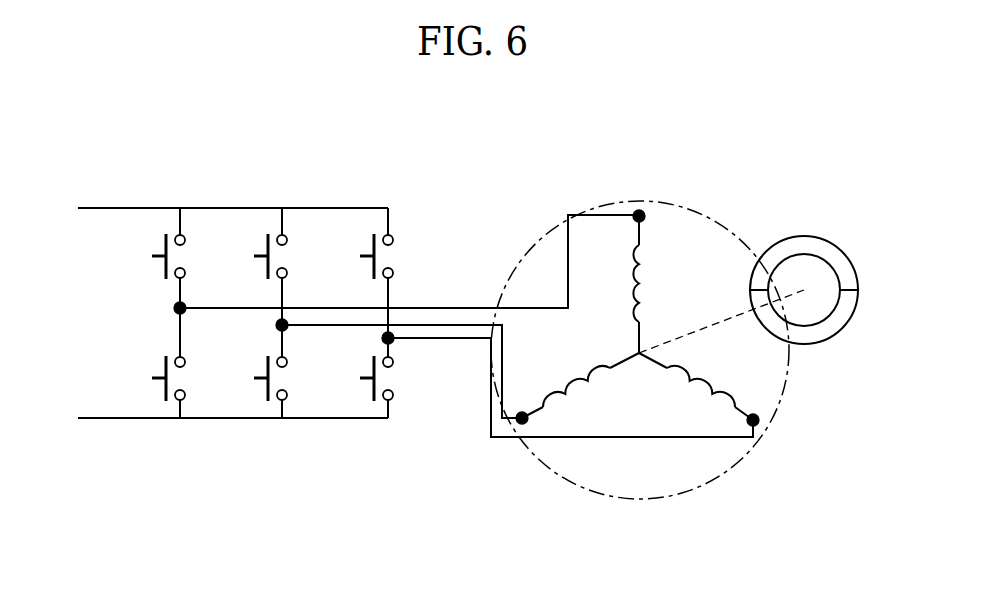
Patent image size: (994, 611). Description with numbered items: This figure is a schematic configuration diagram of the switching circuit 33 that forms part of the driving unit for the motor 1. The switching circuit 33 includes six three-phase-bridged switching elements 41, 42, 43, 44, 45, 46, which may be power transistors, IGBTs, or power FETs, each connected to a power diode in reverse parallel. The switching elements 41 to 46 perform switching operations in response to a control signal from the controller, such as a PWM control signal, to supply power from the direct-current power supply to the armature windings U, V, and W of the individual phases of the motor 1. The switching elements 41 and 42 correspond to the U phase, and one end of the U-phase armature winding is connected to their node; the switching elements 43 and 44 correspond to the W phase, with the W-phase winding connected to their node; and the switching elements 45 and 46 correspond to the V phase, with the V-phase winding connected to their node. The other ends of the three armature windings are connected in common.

The motor 1 is at (728, 190).
The switching circuit 33 is at (266, 180).
The switching element 41 is at (153, 267).
The switching element 42 is at (153, 369).
The switching element 43 is at (254, 255).
The switching element 44 is at (254, 371).
The switching element 45 is at (360, 250).
The switching element 46 is at (360, 371).